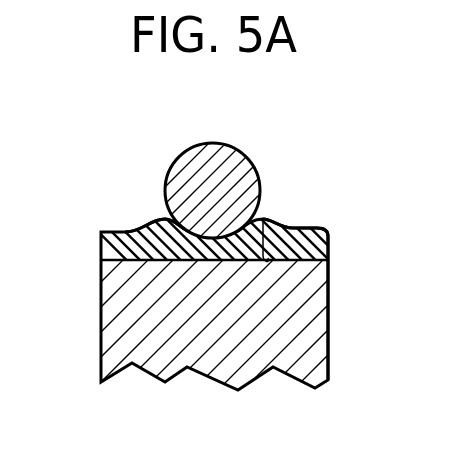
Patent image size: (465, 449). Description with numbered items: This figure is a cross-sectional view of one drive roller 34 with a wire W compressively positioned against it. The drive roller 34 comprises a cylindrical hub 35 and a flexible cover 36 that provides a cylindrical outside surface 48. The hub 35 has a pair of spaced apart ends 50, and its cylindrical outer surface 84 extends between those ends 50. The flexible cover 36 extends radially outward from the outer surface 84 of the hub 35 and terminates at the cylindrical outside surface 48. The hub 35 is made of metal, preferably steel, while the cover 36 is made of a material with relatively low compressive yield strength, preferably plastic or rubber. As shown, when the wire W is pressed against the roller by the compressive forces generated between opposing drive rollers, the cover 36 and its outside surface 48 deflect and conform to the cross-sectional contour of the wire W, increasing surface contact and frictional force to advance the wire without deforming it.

The drive roller 34 is at (88, 208).
The cylindrical hub 35 is at (331, 289).
The flexible cover 36 is at (303, 222).
The cylindrical outside surface 48 is at (130, 232).
The ends 50 is at (100, 327).
The cylindrical outer surface 84 is at (264, 220).
The wire W is at (233, 143).